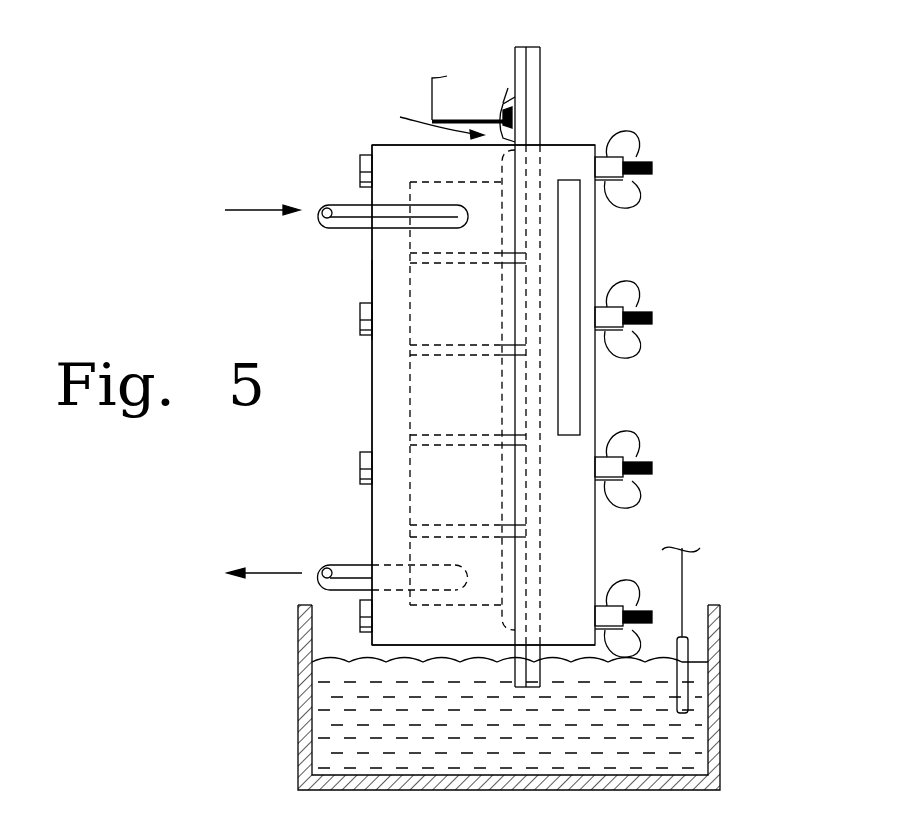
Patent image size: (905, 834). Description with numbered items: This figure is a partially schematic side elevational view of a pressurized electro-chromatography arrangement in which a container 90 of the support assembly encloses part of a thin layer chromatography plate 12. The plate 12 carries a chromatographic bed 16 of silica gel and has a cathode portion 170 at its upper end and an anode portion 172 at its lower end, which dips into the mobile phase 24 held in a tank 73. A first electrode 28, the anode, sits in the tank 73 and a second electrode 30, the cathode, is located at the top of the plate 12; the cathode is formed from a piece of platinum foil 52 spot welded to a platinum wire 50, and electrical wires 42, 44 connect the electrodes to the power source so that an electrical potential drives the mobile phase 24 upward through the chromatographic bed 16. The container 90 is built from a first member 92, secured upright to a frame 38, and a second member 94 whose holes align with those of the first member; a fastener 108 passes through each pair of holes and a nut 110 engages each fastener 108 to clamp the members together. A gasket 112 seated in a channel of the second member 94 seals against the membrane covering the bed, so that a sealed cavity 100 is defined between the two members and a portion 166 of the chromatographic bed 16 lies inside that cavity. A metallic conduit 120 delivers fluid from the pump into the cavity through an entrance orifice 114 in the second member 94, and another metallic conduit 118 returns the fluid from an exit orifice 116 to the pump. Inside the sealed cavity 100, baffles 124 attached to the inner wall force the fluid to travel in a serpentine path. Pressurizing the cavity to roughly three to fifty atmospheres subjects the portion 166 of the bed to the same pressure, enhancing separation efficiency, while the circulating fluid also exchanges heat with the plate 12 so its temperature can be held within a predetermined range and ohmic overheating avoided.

The container 90 is at (296, 121).
The cathode portion 170 is at (492, 58).
The chromatographic bed 16 is at (520, 46).
The thin layer chromatography plate 12 is at (530, 121).
The portion of chromatographic bed 166 is at (510, 507).
The platinum foil 52 is at (503, 103).
The platinum wire 50 is at (499, 110).
The electrical wire 44 is at (432, 98).
The second electrode 30 is at (424, 120).
The first member 92 is at (573, 153).
The second member 94 is at (372, 155).
The nut 110 is at (636, 138).
The fastener 108 is at (652, 170).
The frame 38 is at (572, 266).
The metallic conduit 120 is at (340, 206).
The metallic conduit 118 is at (345, 568).
The exit orifice 116 is at (470, 550).
The gasket 112 is at (504, 455).
The entrance orifice 114 is at (478, 225).
The baffles 124 is at (438, 260).
The sealed cavity 100 is at (412, 292).
The electrical wire 42 is at (683, 580).
The first electrode 28 is at (705, 648).
The tank 73 is at (712, 703).
The mobile phase 24 is at (330, 665).
The anode portion 172 is at (507, 652).